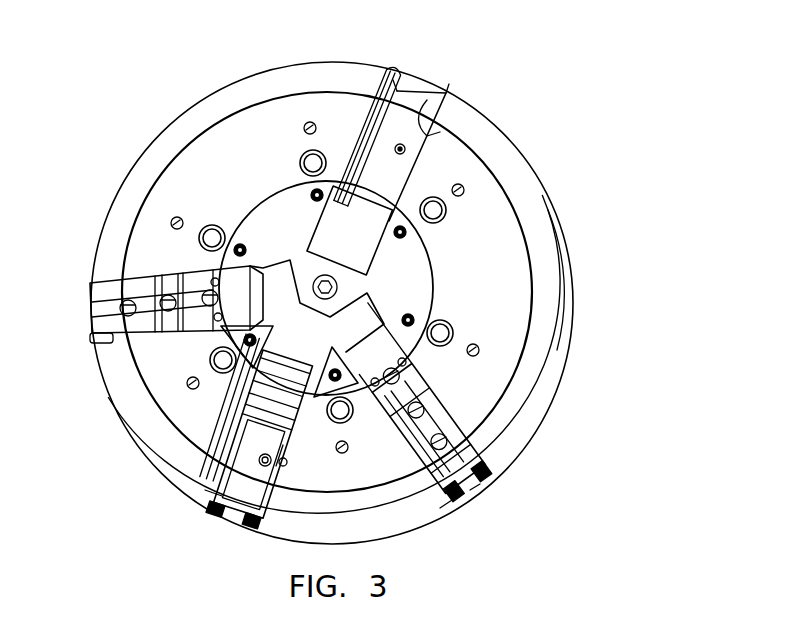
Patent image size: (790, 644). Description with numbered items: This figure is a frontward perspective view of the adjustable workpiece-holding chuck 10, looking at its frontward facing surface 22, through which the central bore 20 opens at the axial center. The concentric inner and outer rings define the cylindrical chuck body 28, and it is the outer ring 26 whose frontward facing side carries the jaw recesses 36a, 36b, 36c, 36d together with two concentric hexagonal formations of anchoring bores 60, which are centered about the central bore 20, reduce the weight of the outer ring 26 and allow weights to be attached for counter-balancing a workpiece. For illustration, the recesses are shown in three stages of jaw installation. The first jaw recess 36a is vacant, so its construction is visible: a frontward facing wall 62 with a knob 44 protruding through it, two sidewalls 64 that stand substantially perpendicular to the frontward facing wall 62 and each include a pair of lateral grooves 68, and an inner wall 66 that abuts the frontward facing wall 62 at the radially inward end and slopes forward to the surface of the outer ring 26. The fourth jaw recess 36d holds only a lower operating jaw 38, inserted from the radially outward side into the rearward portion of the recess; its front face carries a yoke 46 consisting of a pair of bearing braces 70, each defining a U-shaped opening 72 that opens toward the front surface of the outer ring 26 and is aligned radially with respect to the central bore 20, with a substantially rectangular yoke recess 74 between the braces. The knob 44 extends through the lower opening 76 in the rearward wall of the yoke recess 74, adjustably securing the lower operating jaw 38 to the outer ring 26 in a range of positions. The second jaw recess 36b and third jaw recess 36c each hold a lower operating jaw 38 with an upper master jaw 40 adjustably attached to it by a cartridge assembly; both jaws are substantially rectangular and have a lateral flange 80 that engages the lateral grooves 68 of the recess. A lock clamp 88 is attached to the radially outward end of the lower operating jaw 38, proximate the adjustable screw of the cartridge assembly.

The adjustable workpiece-holding chuck 10 is at (181, 84).
The central bore 20 is at (340, 296).
The frontward facing surface 22 is at (148, 162).
The outer ring 26 is at (283, 62).
The cylindrical chuck body 28 is at (612, 338).
The first jaw recess 36a is at (418, 92).
The second jaw recess 36b is at (506, 476).
The third jaw recess 36c is at (105, 326).
The fourth jaw recess 36d is at (215, 470).
The lower operating jaw 38 is at (208, 490).
The upper master jaw 40 is at (103, 286).
The knob 44 is at (395, 149).
The yoke 46 is at (272, 448).
The anchoring bores 60 is at (180, 222).
The frontward facing wall 62 is at (413, 124).
The sidewalls 64 is at (398, 70).
The inner wall 66 is at (326, 212).
The lateral grooves 68 is at (292, 508).
The bearing braces 70 is at (262, 395).
The U-shaped opening 72 is at (290, 370).
The yoke recess 74 is at (250, 452).
The lower opening 76 is at (276, 468).
The lateral flange 80 is at (262, 514).
The lock clamp 88 is at (488, 504).